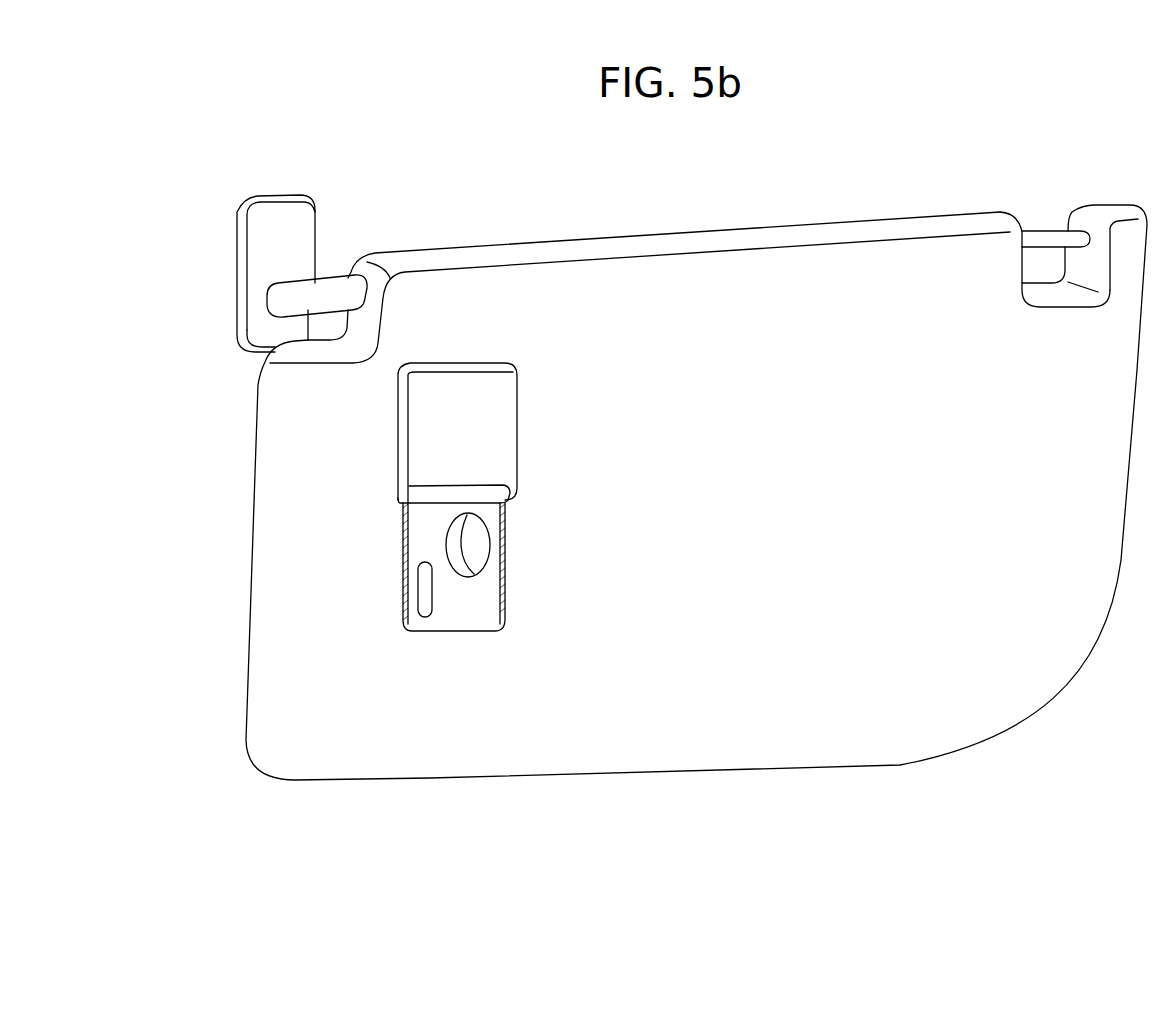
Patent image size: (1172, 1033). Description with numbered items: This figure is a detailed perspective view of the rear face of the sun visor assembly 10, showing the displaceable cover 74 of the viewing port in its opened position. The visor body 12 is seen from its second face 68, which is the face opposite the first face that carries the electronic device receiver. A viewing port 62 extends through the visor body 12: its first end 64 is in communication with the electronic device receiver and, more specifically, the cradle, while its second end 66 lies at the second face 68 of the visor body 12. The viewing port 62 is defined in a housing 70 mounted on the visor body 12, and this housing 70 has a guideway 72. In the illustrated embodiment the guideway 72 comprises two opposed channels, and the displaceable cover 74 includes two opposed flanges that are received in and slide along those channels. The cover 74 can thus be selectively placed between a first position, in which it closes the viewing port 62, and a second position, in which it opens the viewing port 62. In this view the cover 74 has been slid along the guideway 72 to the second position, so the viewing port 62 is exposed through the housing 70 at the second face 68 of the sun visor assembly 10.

The sun visor assembly 10 is at (907, 172).
The visor body 12 is at (377, 747).
The viewing port 62 is at (487, 547).
The first end 64 is at (487, 547).
The second end 66 is at (499, 625).
The second face 68 is at (558, 685).
The housing 70 is at (462, 610).
The guideway 72 is at (407, 590).
The displaceable cover 74 is at (487, 417).